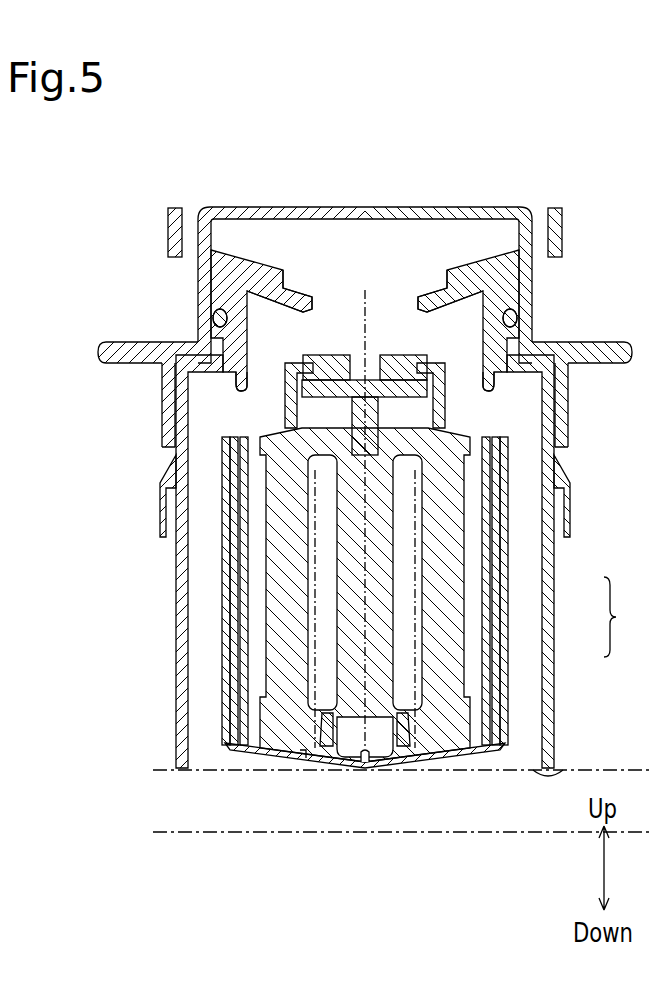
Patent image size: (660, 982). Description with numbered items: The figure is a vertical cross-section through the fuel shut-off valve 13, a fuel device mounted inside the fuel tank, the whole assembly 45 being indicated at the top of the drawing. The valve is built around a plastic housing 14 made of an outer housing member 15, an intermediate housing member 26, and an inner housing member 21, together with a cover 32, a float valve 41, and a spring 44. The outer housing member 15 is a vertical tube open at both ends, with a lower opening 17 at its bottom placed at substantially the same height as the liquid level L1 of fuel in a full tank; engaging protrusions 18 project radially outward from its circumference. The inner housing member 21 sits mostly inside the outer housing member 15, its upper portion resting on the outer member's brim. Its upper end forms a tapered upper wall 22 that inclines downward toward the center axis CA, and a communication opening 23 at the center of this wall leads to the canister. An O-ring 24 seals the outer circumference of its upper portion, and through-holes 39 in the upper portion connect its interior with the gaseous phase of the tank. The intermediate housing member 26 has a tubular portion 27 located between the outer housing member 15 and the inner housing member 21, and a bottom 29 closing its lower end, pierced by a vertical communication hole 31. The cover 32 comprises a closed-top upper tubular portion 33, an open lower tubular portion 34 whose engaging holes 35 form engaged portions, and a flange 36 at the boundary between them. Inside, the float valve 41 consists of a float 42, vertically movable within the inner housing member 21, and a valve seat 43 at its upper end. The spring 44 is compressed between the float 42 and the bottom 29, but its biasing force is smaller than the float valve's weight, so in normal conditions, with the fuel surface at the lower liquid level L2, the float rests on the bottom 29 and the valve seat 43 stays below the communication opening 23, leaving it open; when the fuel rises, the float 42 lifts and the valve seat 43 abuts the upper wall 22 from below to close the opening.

The fuel shut-off valve 13 is at (363, 245).
The housing 14 is at (625, 617).
The outer housing member 15 is at (552, 613).
The lower opening 17 is at (548, 775).
The engaging protrusion 18 is at (161, 470).
The inner housing member 21 is at (488, 580).
The upper wall 22 is at (440, 291).
The communication opening 23 is at (318, 290).
The O-ring 24 is at (518, 310).
The intermediate housing member 26 is at (500, 638).
The tubular portion 27 is at (503, 683).
The bottom 29 is at (453, 757).
The communication hole 31 is at (365, 770).
The cover 32 is at (525, 273).
The upper tubular portion 33 is at (424, 320).
The lower tubular portion 34 is at (568, 399).
The engaging hole 35 is at (161, 452).
The flange 36 is at (612, 349).
The through-hole 39 is at (267, 386).
The float valve 41 is at (454, 595).
The float 42 is at (452, 555).
The valve seat 43 is at (338, 356).
The spring 44 is at (302, 762).
The cover 45 is at (208, 194).
The center axis CA is at (370, 323).
The liquid level L1 is at (173, 769).
The liquid level L2 is at (173, 831).